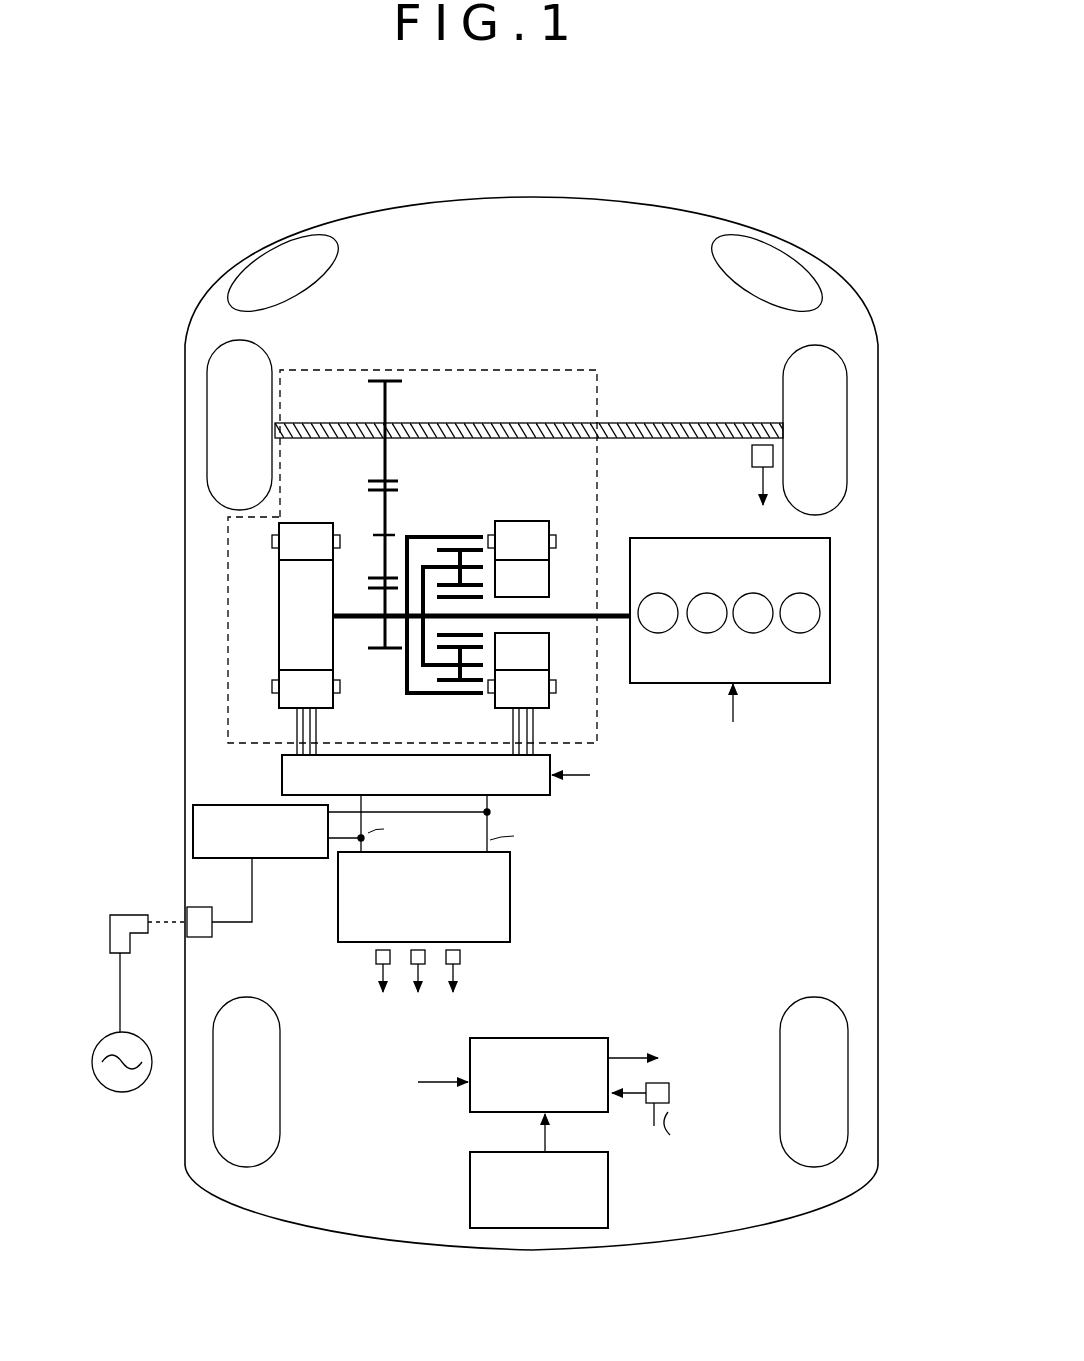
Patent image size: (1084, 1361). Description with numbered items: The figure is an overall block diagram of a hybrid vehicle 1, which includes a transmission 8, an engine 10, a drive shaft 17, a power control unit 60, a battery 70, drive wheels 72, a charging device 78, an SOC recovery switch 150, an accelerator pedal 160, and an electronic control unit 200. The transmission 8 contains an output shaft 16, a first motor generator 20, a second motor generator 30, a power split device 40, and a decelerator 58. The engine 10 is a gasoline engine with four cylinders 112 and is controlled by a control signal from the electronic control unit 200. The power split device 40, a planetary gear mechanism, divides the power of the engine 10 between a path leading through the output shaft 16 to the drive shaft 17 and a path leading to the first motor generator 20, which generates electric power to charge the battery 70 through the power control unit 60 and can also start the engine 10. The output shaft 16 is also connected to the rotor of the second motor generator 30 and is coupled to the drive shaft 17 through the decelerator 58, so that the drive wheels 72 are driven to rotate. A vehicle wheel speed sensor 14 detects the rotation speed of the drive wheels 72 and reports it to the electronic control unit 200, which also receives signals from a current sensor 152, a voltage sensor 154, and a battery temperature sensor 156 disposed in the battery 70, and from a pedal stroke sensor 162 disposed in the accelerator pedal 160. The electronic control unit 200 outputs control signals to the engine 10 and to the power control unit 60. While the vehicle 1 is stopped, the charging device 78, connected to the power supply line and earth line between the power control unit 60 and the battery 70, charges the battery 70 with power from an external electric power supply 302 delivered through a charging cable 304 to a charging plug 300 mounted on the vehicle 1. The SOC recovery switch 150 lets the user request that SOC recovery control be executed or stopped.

The hybrid vehicle 1 is at (540, 166).
The transmission 8 is at (463, 370).
The engine 10 is at (657, 538).
The vehicle wheel speed sensor 14 is at (750, 456).
The output shaft 16 is at (365, 620).
The drive shaft 17 is at (658, 423).
The first motor generator 20 is at (530, 521).
The second motor generator 30 is at (308, 522).
The power split device 40 is at (474, 520).
The decelerator 58 is at (385, 378).
The power control unit 60 is at (282, 770).
The battery 70 is at (338, 892).
The drive wheels 72 is at (800, 348).
The charging device 78 is at (193, 824).
The cylinders 112 is at (702, 594).
The SOC recovery switch 150 is at (610, 1191).
The current sensor 152 is at (376, 957).
The voltage sensor 154 is at (418, 948).
The battery temperature sensor 156 is at (462, 957).
The accelerator pedal 160 is at (673, 1132).
The pedal stroke sensor 162 is at (671, 1091).
The electronic control unit 200 is at (570, 1036).
The charging plug 300 is at (130, 914).
The external electric power supply 302 is at (126, 1032).
The charging cable 304 is at (117, 975).